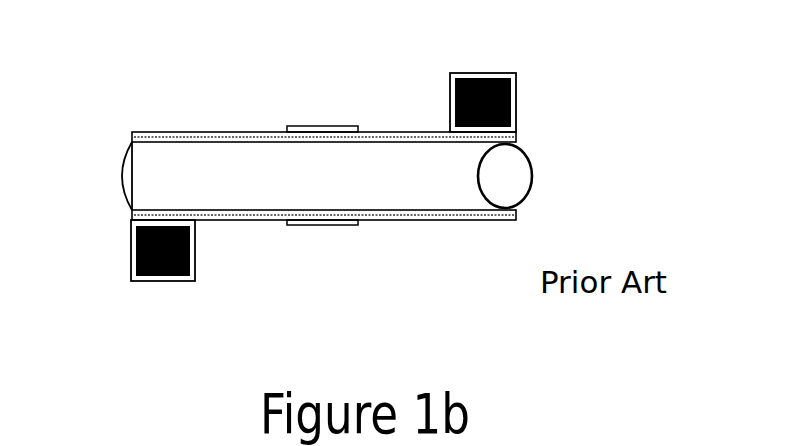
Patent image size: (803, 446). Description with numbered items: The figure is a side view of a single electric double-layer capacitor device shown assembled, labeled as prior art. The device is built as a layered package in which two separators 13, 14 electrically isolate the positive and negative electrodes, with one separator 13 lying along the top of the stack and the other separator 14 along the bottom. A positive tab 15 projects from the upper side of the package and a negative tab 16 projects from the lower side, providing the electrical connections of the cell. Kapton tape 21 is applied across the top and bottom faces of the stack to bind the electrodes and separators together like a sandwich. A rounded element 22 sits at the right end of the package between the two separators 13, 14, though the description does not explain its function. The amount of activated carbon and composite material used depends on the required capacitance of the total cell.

The separator 13 is at (162, 110).
The separator 14 is at (490, 238).
The positive tab 15 is at (460, 72).
The negative tab 16 is at (130, 243).
The Kapton tape 21 is at (307, 125).
The cylindrical element 22 is at (547, 173).